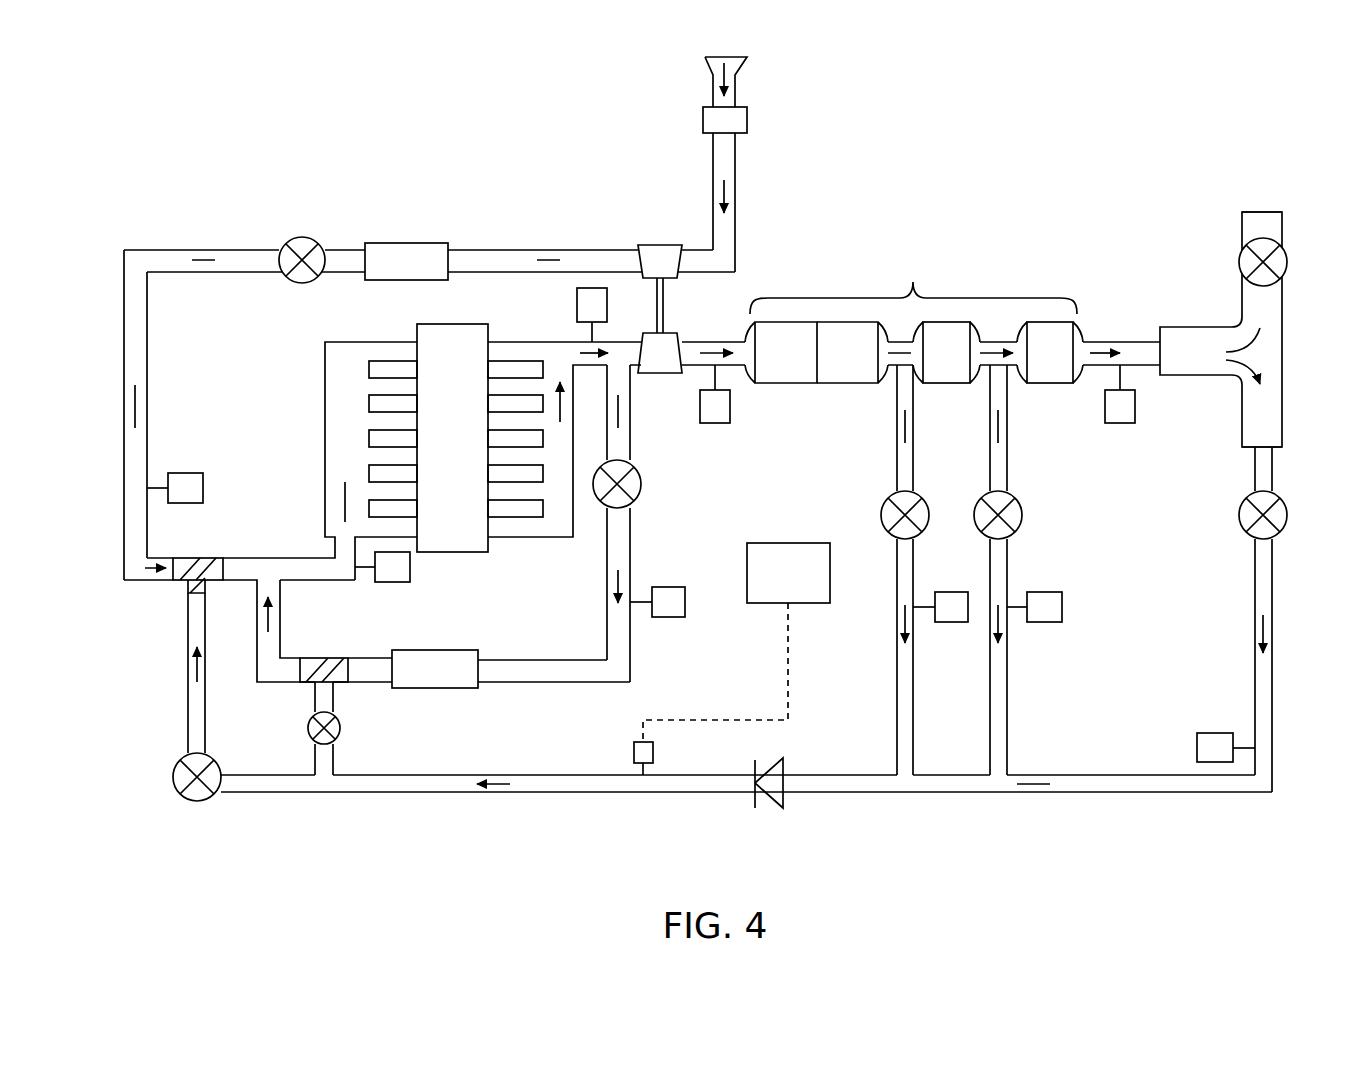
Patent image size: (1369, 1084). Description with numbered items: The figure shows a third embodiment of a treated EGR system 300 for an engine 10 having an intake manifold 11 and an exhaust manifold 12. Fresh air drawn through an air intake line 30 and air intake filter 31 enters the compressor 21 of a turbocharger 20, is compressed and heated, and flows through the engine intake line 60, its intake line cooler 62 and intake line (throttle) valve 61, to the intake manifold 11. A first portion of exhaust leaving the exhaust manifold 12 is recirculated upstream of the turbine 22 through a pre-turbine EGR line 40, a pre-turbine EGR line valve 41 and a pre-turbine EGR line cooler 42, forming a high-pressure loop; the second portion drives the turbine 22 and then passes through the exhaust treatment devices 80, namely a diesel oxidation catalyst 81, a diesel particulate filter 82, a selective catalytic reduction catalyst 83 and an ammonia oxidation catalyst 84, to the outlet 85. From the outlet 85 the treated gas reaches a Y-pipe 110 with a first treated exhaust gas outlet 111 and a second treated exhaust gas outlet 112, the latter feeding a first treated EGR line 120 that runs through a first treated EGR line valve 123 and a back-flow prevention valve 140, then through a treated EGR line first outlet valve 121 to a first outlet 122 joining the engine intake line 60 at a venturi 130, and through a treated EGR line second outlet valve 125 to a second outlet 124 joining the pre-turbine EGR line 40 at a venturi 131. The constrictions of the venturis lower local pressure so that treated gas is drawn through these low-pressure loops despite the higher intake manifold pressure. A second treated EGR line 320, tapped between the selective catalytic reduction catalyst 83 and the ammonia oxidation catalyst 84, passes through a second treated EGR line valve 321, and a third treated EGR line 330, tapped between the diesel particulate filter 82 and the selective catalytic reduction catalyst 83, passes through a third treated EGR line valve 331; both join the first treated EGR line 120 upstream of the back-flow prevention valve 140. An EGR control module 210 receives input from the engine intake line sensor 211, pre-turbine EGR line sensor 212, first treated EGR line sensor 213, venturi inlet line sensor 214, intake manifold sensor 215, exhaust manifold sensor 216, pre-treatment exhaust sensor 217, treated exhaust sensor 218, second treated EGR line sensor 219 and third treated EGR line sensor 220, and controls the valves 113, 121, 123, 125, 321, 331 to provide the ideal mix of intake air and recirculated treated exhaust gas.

The engine 10 is at (457, 324).
The intake manifold 11 is at (325, 378).
The exhaust manifold 12 is at (510, 352).
The turbocharger 20 is at (670, 320).
The compressor 21 is at (652, 245).
The turbine 22 is at (655, 375).
The air intake line 30 is at (703, 168).
The air intake filter 31 is at (703, 118).
The pre-turbine EGR line 40 is at (638, 469).
The pre-turbine EGR line valve 41 is at (641, 488).
The pre-turbine EGR line cooler 42 is at (478, 656).
The engine intake line 60 is at (106, 349).
The intake line (throttle) valve 61 is at (302, 237).
The intake line cooler 62 is at (395, 243).
The exhaust treatment devices 80 is at (914, 351).
The diesel oxidation catalyst 81 is at (785, 383).
The diesel particulate filter 82 is at (848, 383).
The selective catalytic reduction catalyst 83 is at (935, 383).
The ammonia oxidation catalyst 84 is at (1038, 383).
The outlet 85 is at (1110, 341).
The Y-pipe 110 is at (1289, 348).
The first treated exhaust gas outlet 111 is at (1282, 227).
The second treated exhaust gas outlet 112 is at (1282, 410).
The valve 113 is at (1288, 262).
The first treated EGR line 120 is at (1284, 712).
The treated EGR line first outlet valve 121 is at (174, 777).
The first outlet 122 is at (188, 640).
The first treated EGR line valve 123 is at (1288, 520).
The second outlet 124 is at (334, 762).
The treated EGR line second outlet valve 125 is at (339, 722).
The engine intake line venturi 130 is at (205, 558).
The venturi 131 is at (326, 658).
The back-flow prevention valve 140 is at (775, 800).
The EGR control module 210 is at (790, 543).
The engine intake line sensor 211 is at (188, 473).
The pre-turbine EGR line sensor 212 is at (668, 617).
The first treated EGR line sensor 213 is at (1197, 748).
The venturi inlet line sensor 214 is at (634, 752).
The intake manifold sensor 215 is at (410, 570).
The exhaust manifold sensor 216 is at (590, 288).
The pre-treatment exhaust sensor 217 is at (718, 423).
The treated exhaust sensor 218 is at (1120, 423).
The second treated EGR line sensor 219 is at (1062, 607).
The third treated EGR line sensor 220 is at (948, 592).
The treated EGR system 300 is at (1170, 813).
The second treated EGR line 320 is at (1010, 690).
The second treated EGR line valve 321 is at (1022, 515).
The third treated EGR line 330 is at (915, 690).
The third treated EGR line valve 331 is at (881, 510).